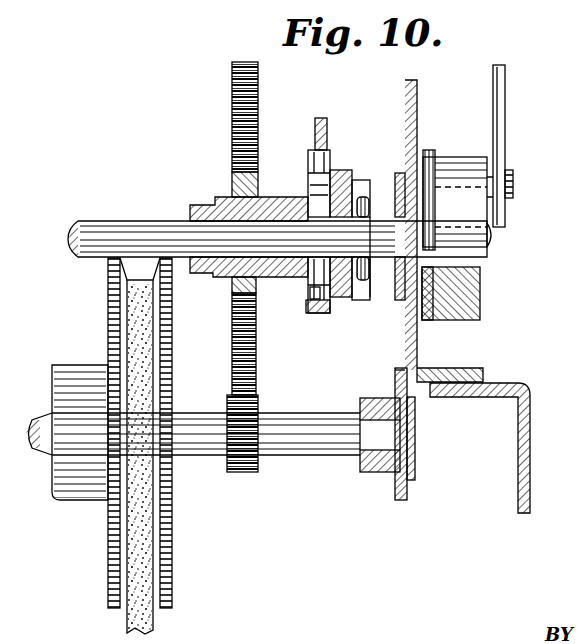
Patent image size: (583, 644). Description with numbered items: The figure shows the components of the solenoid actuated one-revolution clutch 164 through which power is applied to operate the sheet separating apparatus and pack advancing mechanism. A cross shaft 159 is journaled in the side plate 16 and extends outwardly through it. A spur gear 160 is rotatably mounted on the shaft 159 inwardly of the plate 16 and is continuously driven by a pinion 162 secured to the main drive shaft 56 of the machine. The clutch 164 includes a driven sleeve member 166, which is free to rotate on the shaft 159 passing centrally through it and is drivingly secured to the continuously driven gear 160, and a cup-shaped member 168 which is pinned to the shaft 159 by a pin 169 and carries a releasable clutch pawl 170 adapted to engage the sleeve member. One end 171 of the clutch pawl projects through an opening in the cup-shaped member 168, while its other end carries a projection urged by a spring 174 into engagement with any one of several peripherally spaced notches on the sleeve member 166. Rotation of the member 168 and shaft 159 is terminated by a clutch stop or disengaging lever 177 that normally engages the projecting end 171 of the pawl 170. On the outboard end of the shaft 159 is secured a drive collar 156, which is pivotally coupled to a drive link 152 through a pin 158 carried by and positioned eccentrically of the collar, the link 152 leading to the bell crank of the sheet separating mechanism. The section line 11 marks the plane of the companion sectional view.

The cross shaft 159 is at (137, 221).
The driven sleeve member 166 is at (268, 205).
The spur gear 160 is at (258, 92).
The pinion 162 is at (243, 472).
The main drive shaft 56 is at (330, 455).
The side plate 16 is at (418, 129).
The drive collar 156 is at (481, 300).
The drive link 152 is at (505, 123).
The pin 158 is at (514, 183).
The clutch stop or disengaging lever 177 is at (325, 118).
The end of clutch pawl 171 is at (310, 152).
The one-revolution clutch 164 is at (339, 166).
The cup-shaped member 168 is at (349, 178).
The pin 169 is at (366, 292).
The spring 174 is at (308, 293).
The clutch pawl 170 is at (306, 305).
The section line 11 is at (350, 101).